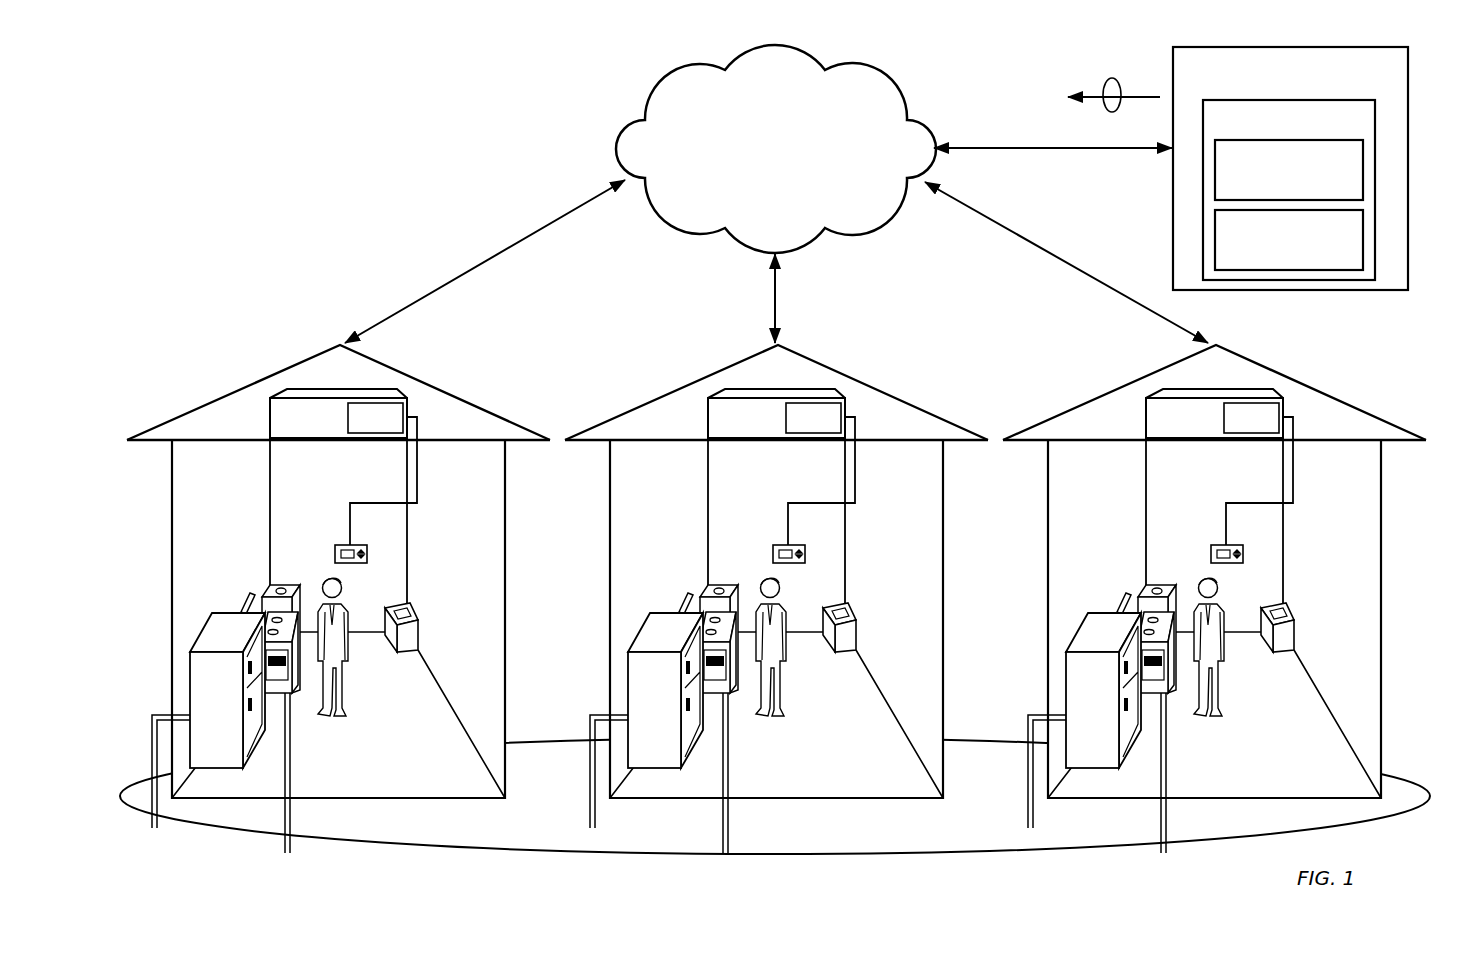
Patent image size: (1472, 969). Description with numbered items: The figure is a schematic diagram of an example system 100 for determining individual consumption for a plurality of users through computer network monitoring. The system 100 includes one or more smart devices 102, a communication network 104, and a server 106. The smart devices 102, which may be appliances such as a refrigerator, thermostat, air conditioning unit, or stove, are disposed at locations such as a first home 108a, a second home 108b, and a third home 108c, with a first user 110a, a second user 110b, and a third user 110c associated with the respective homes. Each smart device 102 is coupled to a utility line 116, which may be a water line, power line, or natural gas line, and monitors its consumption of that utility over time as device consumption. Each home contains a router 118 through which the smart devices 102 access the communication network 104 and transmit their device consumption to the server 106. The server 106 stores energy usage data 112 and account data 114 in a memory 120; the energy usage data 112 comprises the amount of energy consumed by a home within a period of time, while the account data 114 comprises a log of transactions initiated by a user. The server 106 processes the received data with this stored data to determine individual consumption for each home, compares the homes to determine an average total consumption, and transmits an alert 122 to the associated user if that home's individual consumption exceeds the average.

The system 100 is at (378, 107).
The smart devices 102 is at (270, 420).
The communication network 104 is at (759, 184).
The server 106 is at (1306, 88).
The first home 108a is at (228, 394).
The second home 108b is at (776, 571).
The third home 108c is at (1214, 571).
The first user 110a is at (350, 668).
The second user 110b is at (813, 647).
The third user 110c is at (1250, 647).
The energy usage data 112 is at (1363, 233).
The account data 114 is at (1363, 160).
The utility line 116 is at (420, 484).
The router 118 is at (409, 603).
The memory 120 is at (1310, 131).
The alert 122 is at (1103, 108).